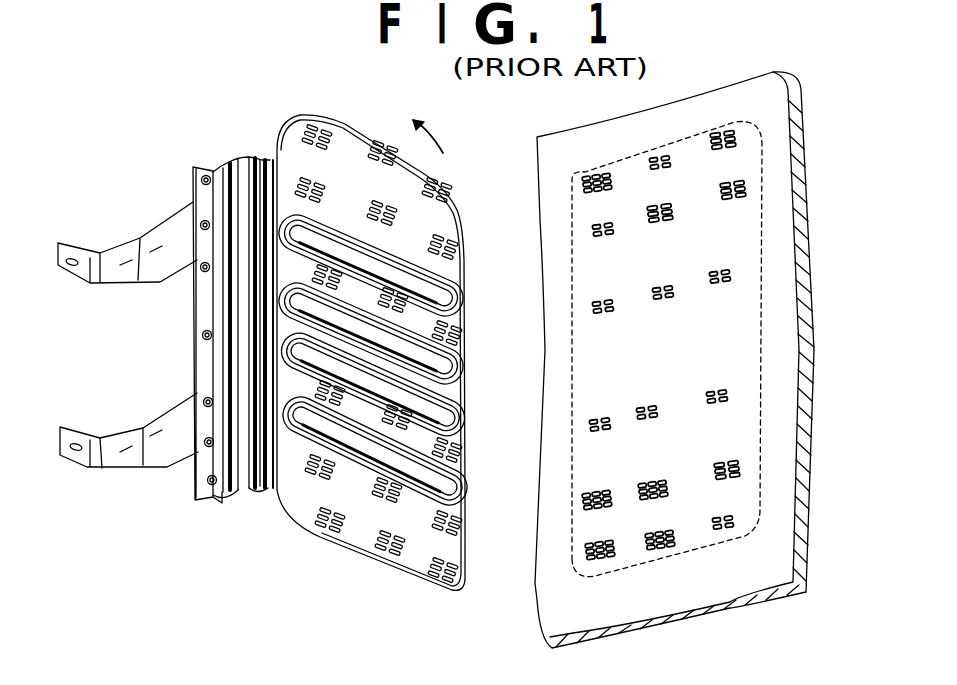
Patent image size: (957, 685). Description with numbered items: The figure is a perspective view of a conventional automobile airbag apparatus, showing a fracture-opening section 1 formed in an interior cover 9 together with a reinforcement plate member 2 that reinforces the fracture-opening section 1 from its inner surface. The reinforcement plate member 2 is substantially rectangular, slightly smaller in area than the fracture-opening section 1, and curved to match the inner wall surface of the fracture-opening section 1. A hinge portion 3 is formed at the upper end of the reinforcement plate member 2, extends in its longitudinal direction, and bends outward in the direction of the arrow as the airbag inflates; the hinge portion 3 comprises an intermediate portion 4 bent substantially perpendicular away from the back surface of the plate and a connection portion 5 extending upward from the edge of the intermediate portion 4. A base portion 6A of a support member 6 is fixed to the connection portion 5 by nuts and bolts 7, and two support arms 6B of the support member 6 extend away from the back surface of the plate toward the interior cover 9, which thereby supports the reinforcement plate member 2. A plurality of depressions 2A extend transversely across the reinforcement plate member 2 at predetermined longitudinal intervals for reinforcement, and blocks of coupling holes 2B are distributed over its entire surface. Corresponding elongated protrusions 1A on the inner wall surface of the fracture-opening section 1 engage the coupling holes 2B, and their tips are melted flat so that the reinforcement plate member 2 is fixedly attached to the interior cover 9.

The fracture-opening section 1 is at (572, 302).
The elongated protrusions 1A is at (590, 222).
The reinforcement plate member 2 is at (291, 134).
The depressions 2A is at (413, 410).
The coupling holes 2B is at (395, 207).
The hinge portion 3 is at (270, 483).
The intermediate portion 4 is at (240, 483).
The connection portion 5 is at (223, 180).
The support member 6 is at (162, 225).
The base portion 6A is at (206, 312).
The support arms 6B is at (108, 255).
The nuts and bolts 7 is at (205, 175).
The interior cover 9 is at (805, 322).